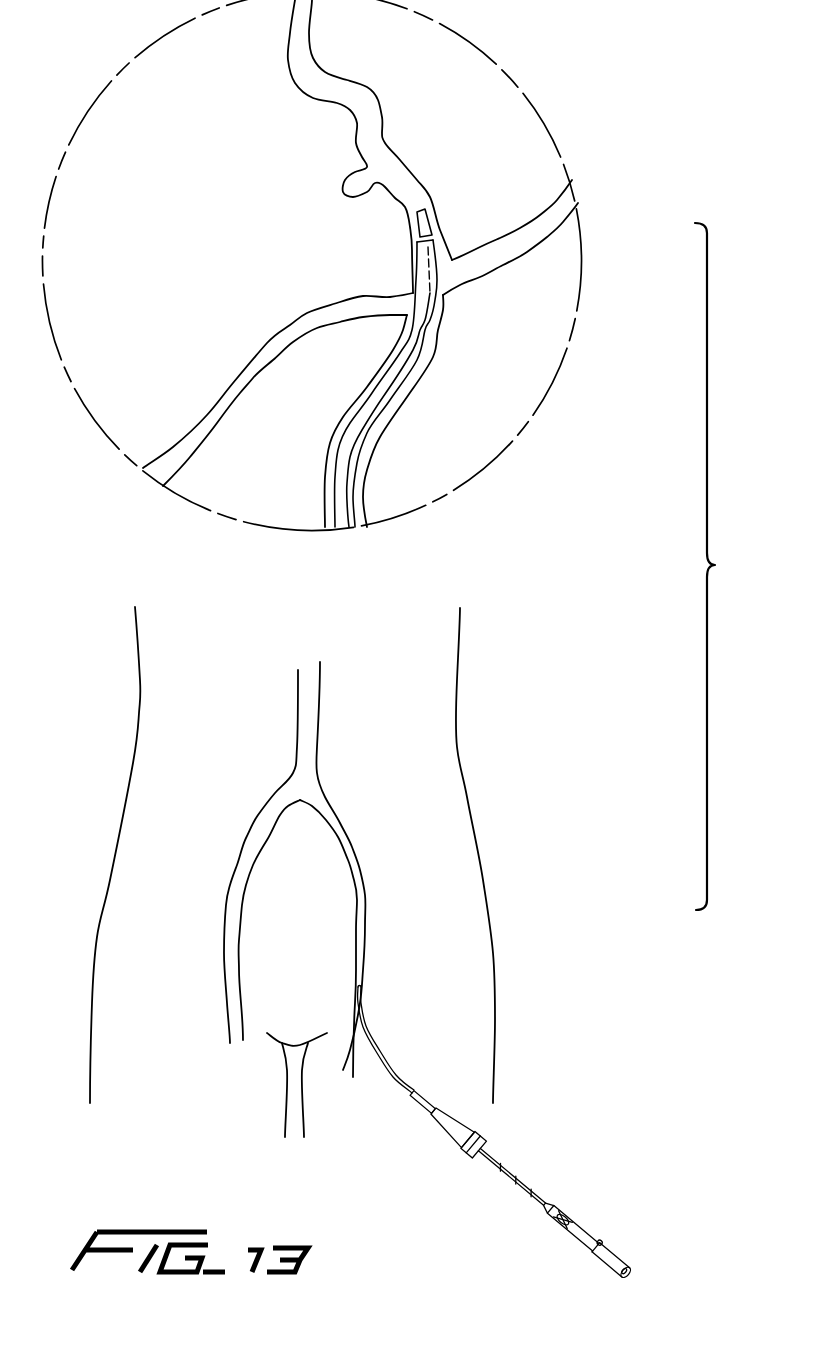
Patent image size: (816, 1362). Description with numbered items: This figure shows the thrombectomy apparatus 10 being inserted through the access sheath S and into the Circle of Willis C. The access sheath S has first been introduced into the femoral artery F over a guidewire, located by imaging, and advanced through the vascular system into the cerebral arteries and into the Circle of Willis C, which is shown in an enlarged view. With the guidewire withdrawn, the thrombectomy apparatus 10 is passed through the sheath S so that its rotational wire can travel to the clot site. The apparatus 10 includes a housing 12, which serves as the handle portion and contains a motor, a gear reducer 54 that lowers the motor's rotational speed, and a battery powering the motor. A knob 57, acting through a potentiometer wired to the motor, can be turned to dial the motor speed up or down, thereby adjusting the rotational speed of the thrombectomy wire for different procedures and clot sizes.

The thrombectomy apparatus 10 is at (516, 1141).
The housing 12 is at (607, 1270).
The gear reducer 54 is at (593, 1242).
The knob 57 is at (600, 1247).
The Circle of Willis C is at (443, 117).
The access sheath S is at (368, 412).
The femoral artery F is at (362, 940).